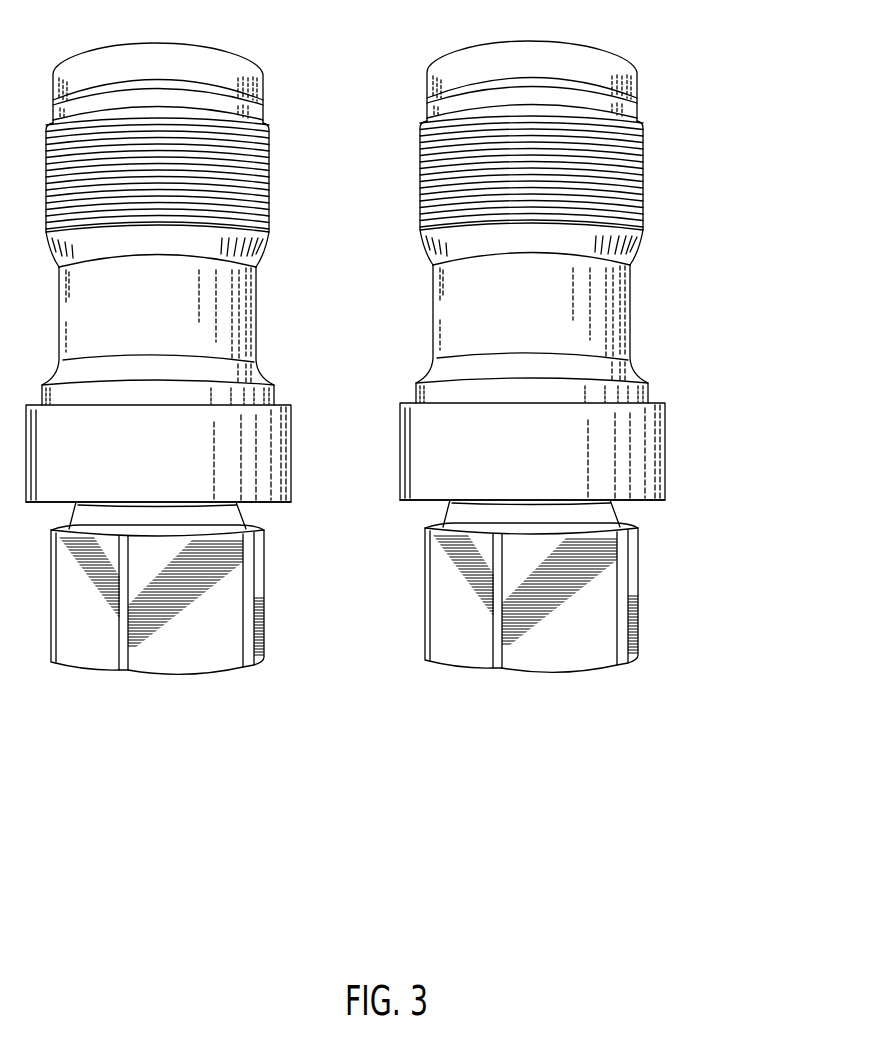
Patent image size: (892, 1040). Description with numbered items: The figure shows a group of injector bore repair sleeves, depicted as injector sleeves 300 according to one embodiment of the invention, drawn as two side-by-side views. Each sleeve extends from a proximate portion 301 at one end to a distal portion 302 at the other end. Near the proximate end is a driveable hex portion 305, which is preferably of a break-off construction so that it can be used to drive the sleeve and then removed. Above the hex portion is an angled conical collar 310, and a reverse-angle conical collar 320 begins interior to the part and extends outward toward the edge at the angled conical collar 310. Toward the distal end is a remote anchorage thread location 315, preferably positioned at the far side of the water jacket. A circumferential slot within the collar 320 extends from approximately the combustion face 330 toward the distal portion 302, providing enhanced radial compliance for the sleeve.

The injector sleeves 300 is at (378, 38).
The proximate portion 301 is at (587, 673).
The distal portion 302 is at (628, 62).
The driveable hex portion 305 is at (567, 618).
The angled conical collar 310 is at (660, 403).
The remote anchorage thread location 315 is at (641, 178).
The reverse-angle conical collar 320 is at (653, 428).
The combustion face 330 is at (653, 500).